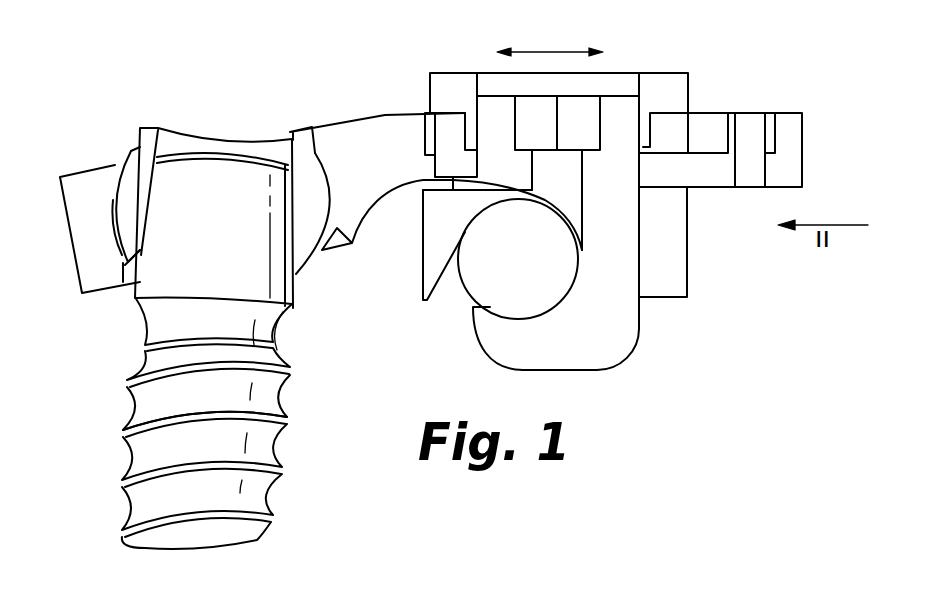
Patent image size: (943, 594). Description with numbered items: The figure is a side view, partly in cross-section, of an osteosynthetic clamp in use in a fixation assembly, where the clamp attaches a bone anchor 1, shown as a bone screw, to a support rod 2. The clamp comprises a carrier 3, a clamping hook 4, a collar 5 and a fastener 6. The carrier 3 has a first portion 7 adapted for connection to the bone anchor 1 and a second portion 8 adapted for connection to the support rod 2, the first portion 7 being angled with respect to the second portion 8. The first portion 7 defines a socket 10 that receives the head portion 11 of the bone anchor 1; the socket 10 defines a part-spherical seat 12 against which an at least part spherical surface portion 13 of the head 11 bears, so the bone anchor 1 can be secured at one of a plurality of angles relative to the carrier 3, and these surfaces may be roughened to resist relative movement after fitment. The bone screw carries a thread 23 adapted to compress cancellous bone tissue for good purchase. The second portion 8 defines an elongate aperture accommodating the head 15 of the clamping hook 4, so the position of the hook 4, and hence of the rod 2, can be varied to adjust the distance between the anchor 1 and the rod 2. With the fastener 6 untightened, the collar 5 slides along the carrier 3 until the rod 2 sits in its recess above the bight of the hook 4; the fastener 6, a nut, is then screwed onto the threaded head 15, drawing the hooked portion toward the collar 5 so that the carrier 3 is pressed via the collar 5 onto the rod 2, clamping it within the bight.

The bone anchor 1 is at (116, 384).
The support rod 2 is at (495, 278).
The carrier 3 is at (358, 142).
The clamping hook 4 is at (610, 350).
The collar 5 is at (673, 258).
The fastener 6 is at (670, 92).
The first portion 7 is at (78, 195).
The second portion 8 is at (743, 127).
The socket 10 is at (114, 225).
The head portion 11 is at (213, 203).
The part-spherical seat 12 is at (117, 222).
The part spherical surface portion 13 is at (131, 150).
The head 15 is at (573, 117).
The thread 23 is at (278, 422).